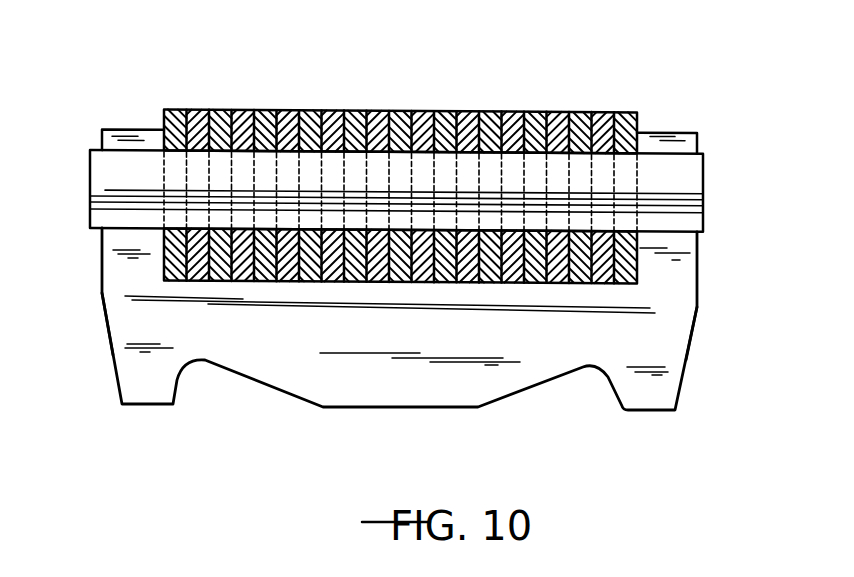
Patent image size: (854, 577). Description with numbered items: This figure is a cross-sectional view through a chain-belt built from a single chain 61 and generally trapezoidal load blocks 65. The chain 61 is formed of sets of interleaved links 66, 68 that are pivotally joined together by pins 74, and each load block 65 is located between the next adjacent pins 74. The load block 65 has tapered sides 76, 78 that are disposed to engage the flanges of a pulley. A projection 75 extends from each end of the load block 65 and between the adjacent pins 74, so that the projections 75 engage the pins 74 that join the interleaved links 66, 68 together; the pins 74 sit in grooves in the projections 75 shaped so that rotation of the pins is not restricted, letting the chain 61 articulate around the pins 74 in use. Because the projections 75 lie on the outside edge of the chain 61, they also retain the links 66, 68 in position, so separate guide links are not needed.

The chain 61 is at (453, 98).
The interleaved links 66 is at (218, 107).
The interleaved links 68 is at (287, 107).
The pins 74 is at (677, 182).
The projection 75 is at (685, 143).
The load block 65 is at (660, 340).
The tapered side 78 is at (697, 308).
The tapered side 76 is at (113, 358).